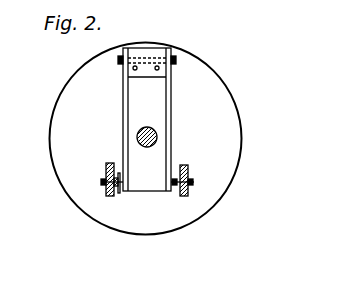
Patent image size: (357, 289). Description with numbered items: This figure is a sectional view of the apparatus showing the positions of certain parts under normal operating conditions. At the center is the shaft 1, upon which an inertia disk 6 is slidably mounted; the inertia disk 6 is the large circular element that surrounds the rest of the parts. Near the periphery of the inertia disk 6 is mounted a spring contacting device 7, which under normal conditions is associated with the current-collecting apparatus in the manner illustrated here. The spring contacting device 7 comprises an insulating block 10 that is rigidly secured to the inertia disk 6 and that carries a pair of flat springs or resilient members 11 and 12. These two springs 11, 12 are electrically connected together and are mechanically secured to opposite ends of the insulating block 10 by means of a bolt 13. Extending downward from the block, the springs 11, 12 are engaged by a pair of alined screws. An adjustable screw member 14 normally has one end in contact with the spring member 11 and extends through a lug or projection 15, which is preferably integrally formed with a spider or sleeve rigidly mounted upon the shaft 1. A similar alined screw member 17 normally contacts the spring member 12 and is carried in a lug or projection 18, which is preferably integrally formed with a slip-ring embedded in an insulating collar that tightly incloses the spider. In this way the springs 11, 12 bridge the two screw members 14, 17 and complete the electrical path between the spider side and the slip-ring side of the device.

The shaft 1 is at (148, 147).
The inertia disk 6 is at (62, 93).
The spring contacting device 7 is at (188, 87).
The insulating block 10 is at (123, 71).
The flat spring 11 is at (123, 104).
The flat spring 12 is at (171, 102).
The bolt 13 is at (176, 60).
The adjustable screw member 14 is at (119, 194).
The lug 15 is at (106, 187).
The screw member 17 is at (173, 190).
The lug 18 is at (187, 196).